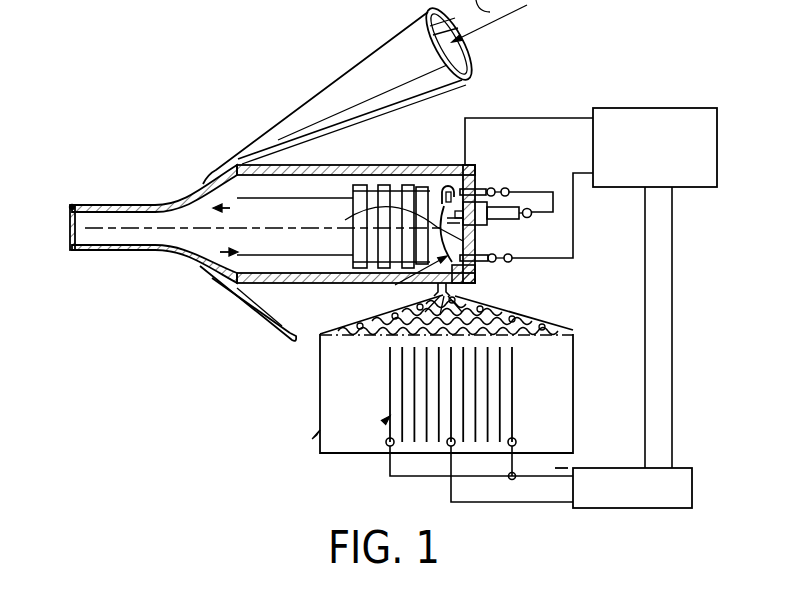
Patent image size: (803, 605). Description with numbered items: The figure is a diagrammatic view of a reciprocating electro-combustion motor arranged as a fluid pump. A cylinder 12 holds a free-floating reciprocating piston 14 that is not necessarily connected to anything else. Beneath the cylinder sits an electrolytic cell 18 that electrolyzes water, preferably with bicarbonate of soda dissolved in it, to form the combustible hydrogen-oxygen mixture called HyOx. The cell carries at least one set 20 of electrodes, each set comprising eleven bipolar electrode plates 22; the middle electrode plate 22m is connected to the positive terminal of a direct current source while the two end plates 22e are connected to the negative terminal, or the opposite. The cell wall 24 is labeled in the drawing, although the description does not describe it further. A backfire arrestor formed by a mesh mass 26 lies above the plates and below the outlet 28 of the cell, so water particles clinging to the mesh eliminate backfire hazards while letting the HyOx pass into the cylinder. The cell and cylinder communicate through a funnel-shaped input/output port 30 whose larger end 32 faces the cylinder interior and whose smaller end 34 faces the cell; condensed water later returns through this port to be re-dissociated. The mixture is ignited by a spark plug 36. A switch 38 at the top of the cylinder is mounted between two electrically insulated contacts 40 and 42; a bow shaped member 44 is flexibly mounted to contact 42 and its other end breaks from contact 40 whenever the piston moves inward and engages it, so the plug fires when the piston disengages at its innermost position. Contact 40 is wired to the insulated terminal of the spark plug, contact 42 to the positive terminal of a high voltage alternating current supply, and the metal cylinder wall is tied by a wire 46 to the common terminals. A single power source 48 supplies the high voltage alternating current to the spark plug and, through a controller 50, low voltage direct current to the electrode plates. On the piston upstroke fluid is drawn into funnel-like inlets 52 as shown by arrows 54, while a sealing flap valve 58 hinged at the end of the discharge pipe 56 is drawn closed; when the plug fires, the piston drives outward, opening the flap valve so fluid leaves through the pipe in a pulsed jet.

The cylinder 12 is at (352, 164).
The reciprocating piston 14 is at (428, 165).
The electrolytic cell 18 is at (316, 434).
The set of electrodes 20 is at (386, 420).
The bipolar electrode plates 22 is at (428, 433).
The end plates 22e is at (390, 377).
The middle electrode plate 22m is at (455, 412).
The collector wall 24 is at (333, 396).
The backfire arrestor 26 is at (533, 318).
The outlet 28 is at (395, 285).
The input/output port 30 is at (475, 284).
The larger end 32 is at (470, 277).
The smaller end 34 is at (455, 293).
The spark plug 36 is at (529, 221).
The switch 38 is at (440, 289).
The contact 40 is at (482, 188).
The contact 42 is at (495, 254).
The bow shaped member 44 is at (348, 226).
The wire 46 is at (485, 118).
The power source 48 is at (645, 108).
The controller 50 is at (648, 508).
The funnel-like inlets 52 is at (362, 55).
The arrows 54 is at (220, 252).
The discharge pipe 56 is at (117, 205).
The sealing flap valve 58 is at (69, 230).